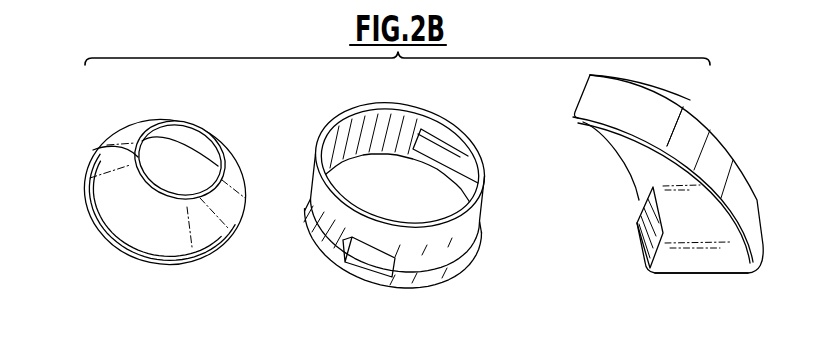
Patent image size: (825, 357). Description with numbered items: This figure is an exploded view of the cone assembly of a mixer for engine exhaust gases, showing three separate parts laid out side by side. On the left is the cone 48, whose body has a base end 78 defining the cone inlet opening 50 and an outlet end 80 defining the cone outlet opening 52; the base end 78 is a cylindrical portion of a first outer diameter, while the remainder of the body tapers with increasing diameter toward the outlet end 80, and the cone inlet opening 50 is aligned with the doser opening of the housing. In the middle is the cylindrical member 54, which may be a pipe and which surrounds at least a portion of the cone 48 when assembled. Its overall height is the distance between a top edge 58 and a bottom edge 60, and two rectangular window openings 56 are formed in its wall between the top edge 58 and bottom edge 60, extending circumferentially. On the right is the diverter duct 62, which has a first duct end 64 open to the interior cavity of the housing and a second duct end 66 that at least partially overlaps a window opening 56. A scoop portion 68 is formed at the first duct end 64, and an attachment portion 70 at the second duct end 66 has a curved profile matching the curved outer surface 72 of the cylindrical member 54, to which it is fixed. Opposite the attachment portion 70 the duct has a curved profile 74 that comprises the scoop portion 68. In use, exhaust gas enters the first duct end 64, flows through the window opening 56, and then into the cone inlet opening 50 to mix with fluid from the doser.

The cone 48 is at (238, 156).
The cone inlet opening 50 is at (93, 150).
The cone outlet opening 52 is at (174, 266).
The cylindrical member 54 is at (309, 256).
The window openings 56 is at (445, 155).
The top edge 58 is at (480, 168).
The bottom edge 60 is at (432, 280).
The diverter duct 62 is at (732, 146).
The first duct end 64 is at (717, 273).
The second duct end 66 is at (573, 110).
The scoop portion 68 is at (755, 260).
The attachment portion 70 is at (612, 148).
The outer surface 72 is at (475, 227).
The curved profile 74 is at (682, 157).
The base end 78 is at (193, 129).
The outlet end 80 is at (98, 221).